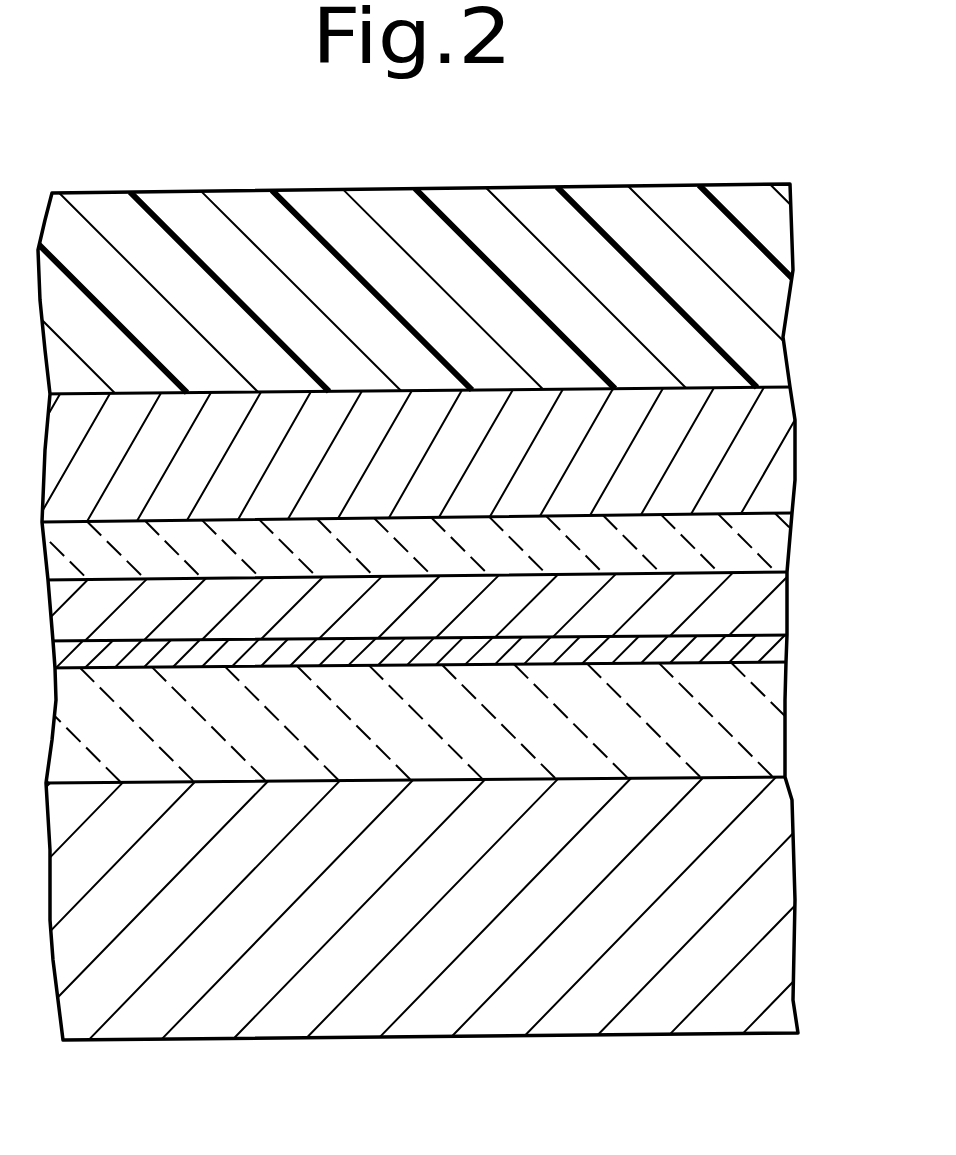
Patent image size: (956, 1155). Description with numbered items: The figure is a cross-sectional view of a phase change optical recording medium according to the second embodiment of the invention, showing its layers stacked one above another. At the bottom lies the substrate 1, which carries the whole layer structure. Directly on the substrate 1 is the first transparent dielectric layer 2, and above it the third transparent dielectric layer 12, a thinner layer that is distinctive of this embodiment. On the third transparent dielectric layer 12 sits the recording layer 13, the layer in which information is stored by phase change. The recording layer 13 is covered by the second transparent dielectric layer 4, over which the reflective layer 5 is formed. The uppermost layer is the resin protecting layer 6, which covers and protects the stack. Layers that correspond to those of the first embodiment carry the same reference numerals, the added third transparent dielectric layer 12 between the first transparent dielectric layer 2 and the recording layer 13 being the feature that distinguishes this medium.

The substrate 1 is at (760, 898).
The first transparent dielectric layer 2 is at (765, 728).
The third transparent dielectric layer 12 is at (775, 647).
The recording layer 13 is at (770, 605).
The second transparent dielectric layer 4 is at (772, 543).
The reflective layer 5 is at (775, 452).
The resin protecting layer 6 is at (773, 297).